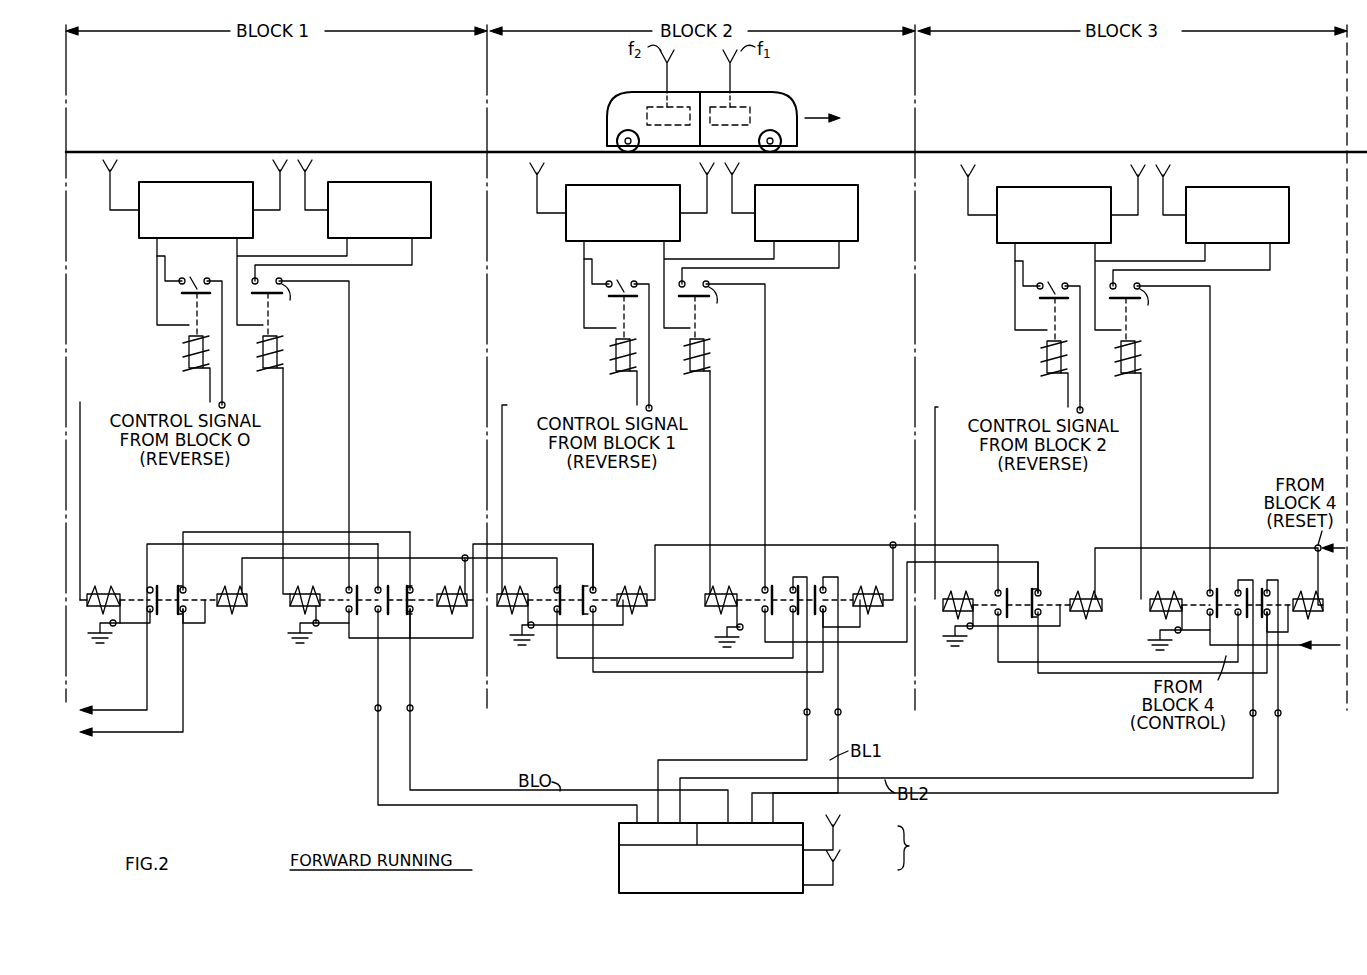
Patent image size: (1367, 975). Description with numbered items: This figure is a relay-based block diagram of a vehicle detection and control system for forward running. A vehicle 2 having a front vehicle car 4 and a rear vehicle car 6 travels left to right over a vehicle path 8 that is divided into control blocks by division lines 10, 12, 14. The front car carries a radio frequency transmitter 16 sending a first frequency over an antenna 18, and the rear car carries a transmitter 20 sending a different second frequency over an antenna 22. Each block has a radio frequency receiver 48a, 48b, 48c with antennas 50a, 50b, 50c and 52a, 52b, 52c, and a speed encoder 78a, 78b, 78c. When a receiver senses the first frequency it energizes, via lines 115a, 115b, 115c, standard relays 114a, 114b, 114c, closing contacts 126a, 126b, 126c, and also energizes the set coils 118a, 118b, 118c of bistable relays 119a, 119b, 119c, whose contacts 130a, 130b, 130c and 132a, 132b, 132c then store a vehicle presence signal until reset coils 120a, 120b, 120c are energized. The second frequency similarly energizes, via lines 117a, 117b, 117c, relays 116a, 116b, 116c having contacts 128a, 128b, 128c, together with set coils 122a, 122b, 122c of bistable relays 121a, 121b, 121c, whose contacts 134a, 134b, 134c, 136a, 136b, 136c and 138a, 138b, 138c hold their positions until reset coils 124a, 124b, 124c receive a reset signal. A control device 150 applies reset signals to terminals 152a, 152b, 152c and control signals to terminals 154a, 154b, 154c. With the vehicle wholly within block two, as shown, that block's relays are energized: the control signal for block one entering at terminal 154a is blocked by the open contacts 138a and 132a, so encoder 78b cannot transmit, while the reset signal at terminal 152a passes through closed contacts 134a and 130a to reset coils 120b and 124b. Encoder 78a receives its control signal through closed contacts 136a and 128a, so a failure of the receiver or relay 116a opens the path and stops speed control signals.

The vehicle 2 is at (763, 81).
The front vehicle car 4 is at (797, 131).
The rear vehicle car 6 is at (607, 134).
The vehicle path 8 is at (952, 152).
The division line 10 is at (66, 88).
The division line 12 is at (487, 99).
The division line 14 is at (915, 100).
The radio frequency transmitter 16 is at (719, 124).
The antenna 18 is at (722, 51).
The radio frequency transmitter 20 is at (687, 127).
The antenna 22 is at (682, 51).
The radio frequency receiver 48a is at (623, 201).
The radio frequency receiver 48b is at (216, 182).
The radio frequency receiver 48c is at (1054, 203).
The receiving antenna f1 50a is at (558, 187).
The receiving antenna f1 50b is at (113, 170).
The receiving antenna f1 50c is at (988, 189).
The receiving antenna f2 52a is at (707, 187).
The receiving antenna f2 52b is at (278, 174).
The receiving antenna f2 52c is at (1138, 189).
The speed encoder 78a is at (806, 201).
The speed encoder 78b is at (383, 180).
The speed encoder 78c is at (1237, 203).
The relay 114a is at (598, 350).
The relay 114b is at (188, 352).
The relay 114c is at (1029, 352).
The line 115a is at (568, 282).
The line 115b is at (154, 256).
The line 115c is at (999, 284).
The relay 116a is at (726, 335).
The relay 116b is at (277, 352).
The relay 116c is at (1156, 337).
The line 117a is at (719, 282).
The line 117b is at (244, 256).
The line 117c is at (1150, 284).
The set coil 118a is at (557, 615).
The set coil 118b is at (104, 593).
The set coil 118c is at (989, 618).
The bistable relay 119a is at (630, 656).
The bistable relay 119b is at (220, 656).
The bistable relay 119c is at (1076, 656).
The reset coil 120a is at (626, 572).
The reset coil 120b is at (224, 584).
The reset coil 120c is at (1074, 599).
The bistable relay 121a is at (893, 666).
The bistable relay 121b is at (448, 666).
The bistable relay 121c is at (1326, 644).
The set coil 122a is at (722, 608).
The set coil 122b is at (292, 607).
The set coil 122c is at (1150, 614).
The reset coil 124a is at (889, 596).
The reset coil 124b is at (465, 606).
The reset coil 124c is at (1308, 600).
The relay contacts 126a is at (618, 335).
The relay contacts 126b is at (191, 332).
The relay contacts 126c is at (1049, 337).
The relay contacts 128a is at (759, 285).
The relay contacts 128b is at (332, 282).
The relay contacts 128c is at (1190, 287).
The relay contacts 130a is at (555, 589).
The relay contacts 130b is at (146, 586).
The relay contacts 130c is at (994, 592).
The relay contacts 132a is at (636, 590).
The relay contacts 132b is at (230, 592).
The relay contacts 132c is at (1044, 591).
The relay contacts 134a is at (783, 588).
The relay contacts 134b is at (376, 612).
The relay contacts 134c is at (1228, 580).
The relay contacts 136a is at (762, 589).
The relay contacts 136b is at (346, 588).
The relay contacts 136c is at (1204, 590).
The relay contacts 138a is at (822, 588).
The relay contacts 138b is at (430, 580).
The relay contacts 138c is at (1258, 590).
The control device 150 is at (618, 864).
The terminal 152a is at (805, 716).
The terminal 152b is at (375, 710).
The terminal 152c is at (1250, 718).
The terminal 154a is at (840, 716).
The terminal 154b is at (412, 710).
The terminal 154c is at (1281, 718).